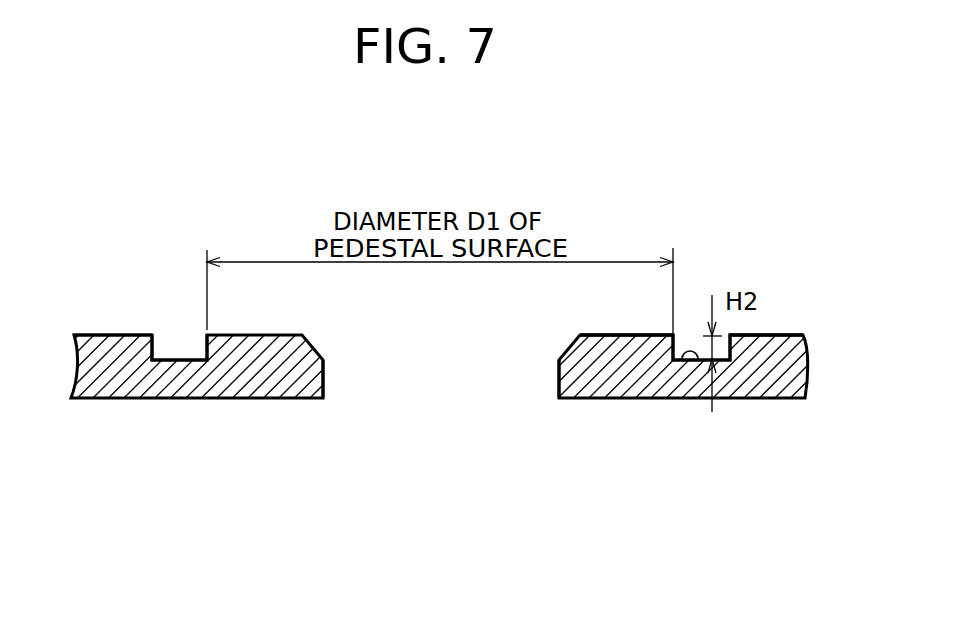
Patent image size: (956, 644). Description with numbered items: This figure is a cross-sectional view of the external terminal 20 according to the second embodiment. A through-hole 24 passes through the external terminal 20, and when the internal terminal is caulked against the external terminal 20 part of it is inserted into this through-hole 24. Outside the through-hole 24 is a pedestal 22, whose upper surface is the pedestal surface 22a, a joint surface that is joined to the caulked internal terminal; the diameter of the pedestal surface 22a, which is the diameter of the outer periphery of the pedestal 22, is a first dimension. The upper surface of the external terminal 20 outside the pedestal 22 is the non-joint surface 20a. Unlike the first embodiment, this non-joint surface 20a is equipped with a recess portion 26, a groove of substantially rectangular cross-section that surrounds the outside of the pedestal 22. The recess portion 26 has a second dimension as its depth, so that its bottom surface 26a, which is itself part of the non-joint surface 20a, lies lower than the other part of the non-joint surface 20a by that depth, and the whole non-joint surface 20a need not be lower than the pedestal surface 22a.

The external terminal 20 is at (122, 225).
The non-joint surface 20a is at (118, 320).
The pedestal 22 is at (680, 340).
The pedestal surface 22a is at (633, 330).
The through-hole 24 is at (368, 398).
The recess portion 26 is at (178, 337).
The bottom surface 26a is at (688, 358).